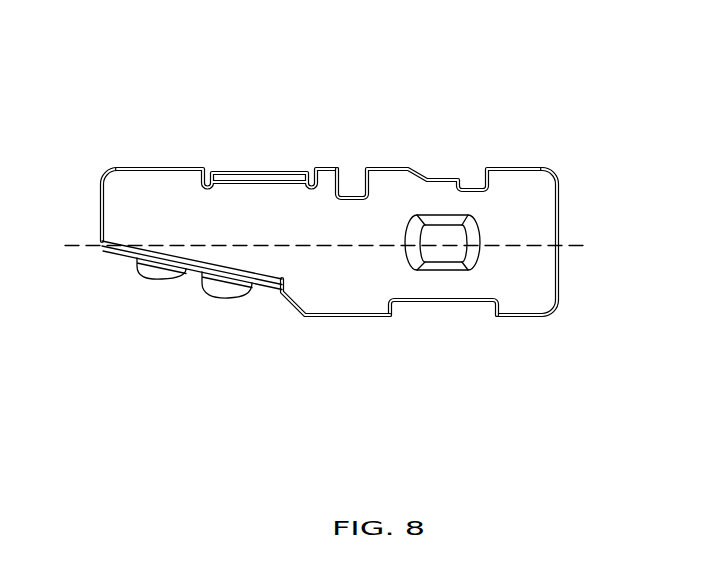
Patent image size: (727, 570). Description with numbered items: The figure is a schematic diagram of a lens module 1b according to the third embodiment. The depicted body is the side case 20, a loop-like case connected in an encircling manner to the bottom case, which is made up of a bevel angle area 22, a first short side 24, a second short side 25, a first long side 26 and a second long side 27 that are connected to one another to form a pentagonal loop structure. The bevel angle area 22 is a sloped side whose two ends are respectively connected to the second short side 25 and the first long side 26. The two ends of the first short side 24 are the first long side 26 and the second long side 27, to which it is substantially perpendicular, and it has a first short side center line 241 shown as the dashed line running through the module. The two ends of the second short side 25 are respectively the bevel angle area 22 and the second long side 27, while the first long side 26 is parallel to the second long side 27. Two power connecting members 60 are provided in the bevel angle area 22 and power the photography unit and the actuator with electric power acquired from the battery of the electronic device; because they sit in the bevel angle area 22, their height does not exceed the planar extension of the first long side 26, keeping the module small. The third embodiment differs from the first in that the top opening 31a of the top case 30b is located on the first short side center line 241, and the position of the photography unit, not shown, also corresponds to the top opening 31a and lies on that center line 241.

The lens module 1b is at (84, 81).
The side case 20 is at (327, 317).
The bevel angle area 22 is at (123, 256).
The first short side 24 is at (556, 283).
The first short side center line 241 is at (344, 246).
The second short side 25 is at (102, 205).
The first long side 26 is at (510, 317).
The second long side 27 is at (163, 168).
The top case 30b is at (387, 183).
The top opening 31a is at (412, 258).
The power connecting members 60 is at (157, 274).